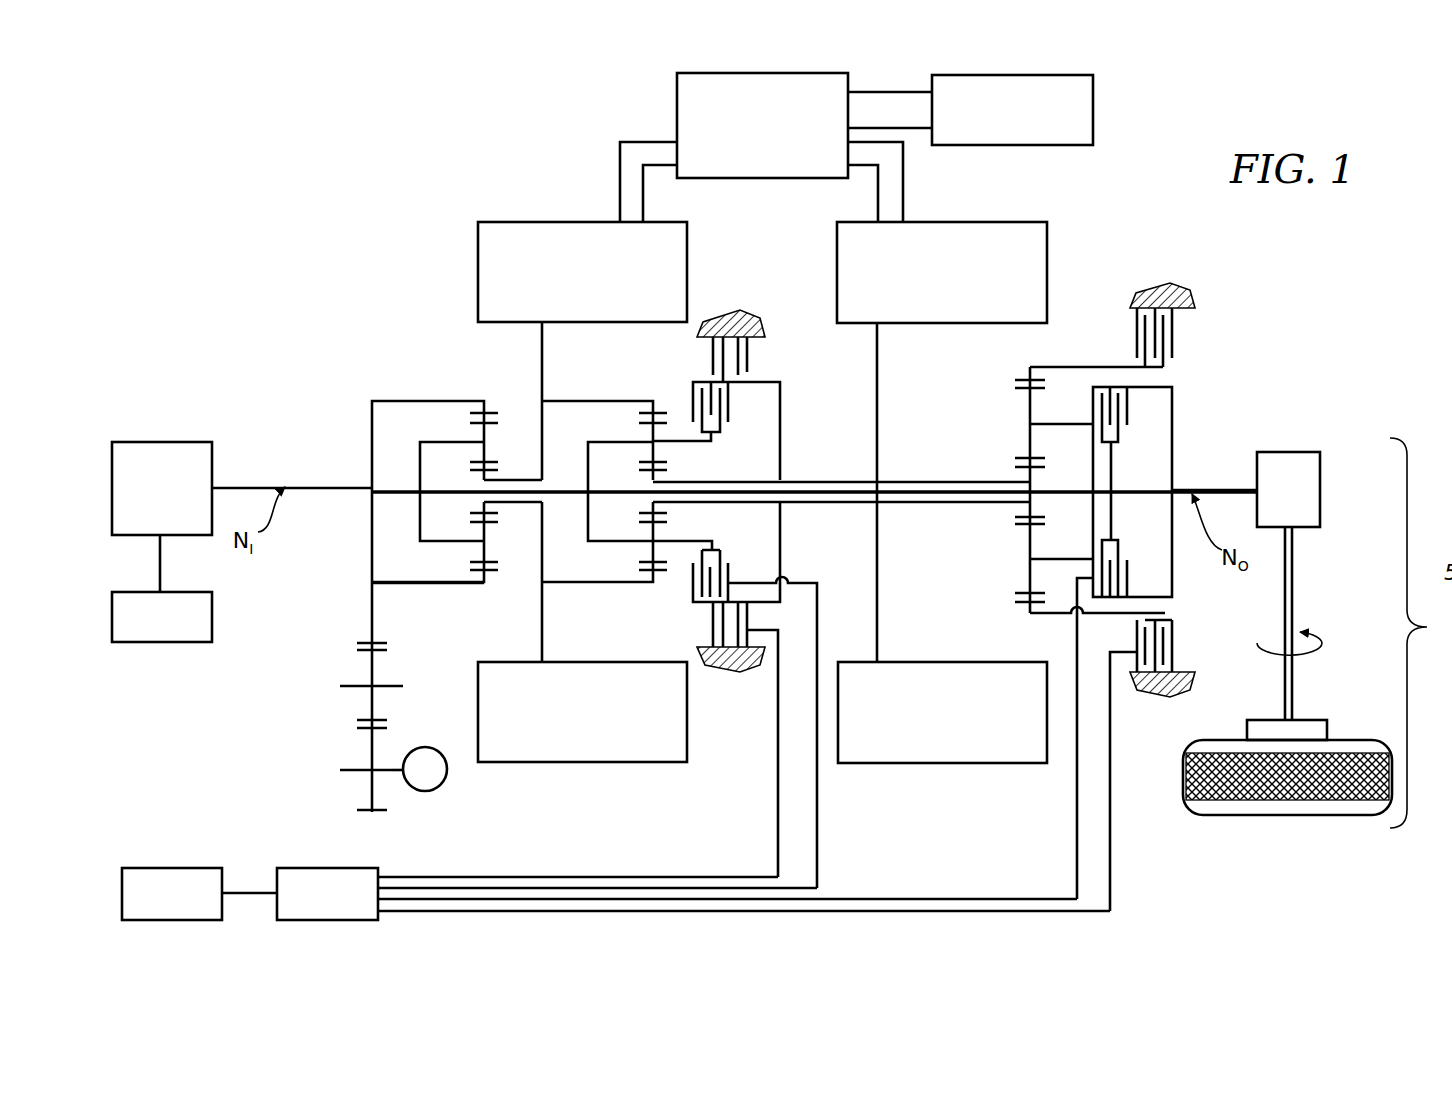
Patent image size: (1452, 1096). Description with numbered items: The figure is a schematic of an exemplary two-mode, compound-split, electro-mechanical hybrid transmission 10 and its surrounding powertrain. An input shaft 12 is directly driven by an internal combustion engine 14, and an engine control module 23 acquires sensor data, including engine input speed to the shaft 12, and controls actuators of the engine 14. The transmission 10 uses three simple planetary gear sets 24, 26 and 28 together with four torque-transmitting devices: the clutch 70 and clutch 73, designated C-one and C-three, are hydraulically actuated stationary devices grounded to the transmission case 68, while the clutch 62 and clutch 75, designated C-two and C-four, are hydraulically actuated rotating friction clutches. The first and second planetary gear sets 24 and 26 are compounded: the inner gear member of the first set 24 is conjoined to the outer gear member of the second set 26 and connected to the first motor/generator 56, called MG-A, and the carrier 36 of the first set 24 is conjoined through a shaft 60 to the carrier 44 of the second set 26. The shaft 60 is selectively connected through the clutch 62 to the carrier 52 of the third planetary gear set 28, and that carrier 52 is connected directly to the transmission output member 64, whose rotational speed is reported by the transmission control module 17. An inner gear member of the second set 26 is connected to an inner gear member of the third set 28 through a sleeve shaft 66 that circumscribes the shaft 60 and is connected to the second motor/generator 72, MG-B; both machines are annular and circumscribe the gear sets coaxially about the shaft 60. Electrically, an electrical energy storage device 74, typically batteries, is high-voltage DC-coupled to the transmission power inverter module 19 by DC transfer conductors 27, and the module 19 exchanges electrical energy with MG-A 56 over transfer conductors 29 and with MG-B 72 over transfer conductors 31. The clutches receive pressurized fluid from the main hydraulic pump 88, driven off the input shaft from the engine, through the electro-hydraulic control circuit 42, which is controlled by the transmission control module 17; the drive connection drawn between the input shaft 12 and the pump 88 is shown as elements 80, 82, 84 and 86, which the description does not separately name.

The electro-mechanical hybrid transmission 10 is at (437, 183).
The input shaft 12 is at (330, 482).
The internal combustion engine 14 is at (167, 442).
The transmission control module 17 is at (160, 868).
The transmission power inverter module 19 is at (677, 86).
The engine control module 23 is at (212, 625).
The first planetary gear set 24 is at (472, 395).
The second planetary gear set 26 is at (645, 395).
The DC transfer conductors 27 is at (866, 92).
The third planetary gear set 28 is at (1022, 364).
The transfer conductors 29 is at (620, 180).
The transfer conductors 31 is at (903, 175).
The carrier of the first planetary gear set 36 is at (420, 508).
The electro-hydraulic control circuit 42 is at (295, 868).
The carrier of the second planetary gear set 44 is at (588, 522).
The carrier of the third planetary gear set 52 is at (1172, 397).
The motor/generator MG-A 56 is at (478, 258).
The shaft 60 is at (850, 492).
The clutch C2 62 is at (1132, 432).
The transmission output member 64 is at (1228, 490).
The sleeve shaft 66 is at (820, 482).
The transmission case 68 is at (727, 312).
The clutch C1 70 is at (1128, 333).
The motor/generator MG-B 72 is at (1047, 238).
The clutch C3 73 is at (752, 362).
The electrical energy storage device 74 is at (1093, 100).
The clutch C4 75 is at (728, 412).
The shaft 80 is at (372, 545).
The gear 82 is at (372, 680).
The gear 84 is at (372, 790).
The pump shaft 86 is at (393, 772).
The main hydraulic pump 88 is at (440, 785).